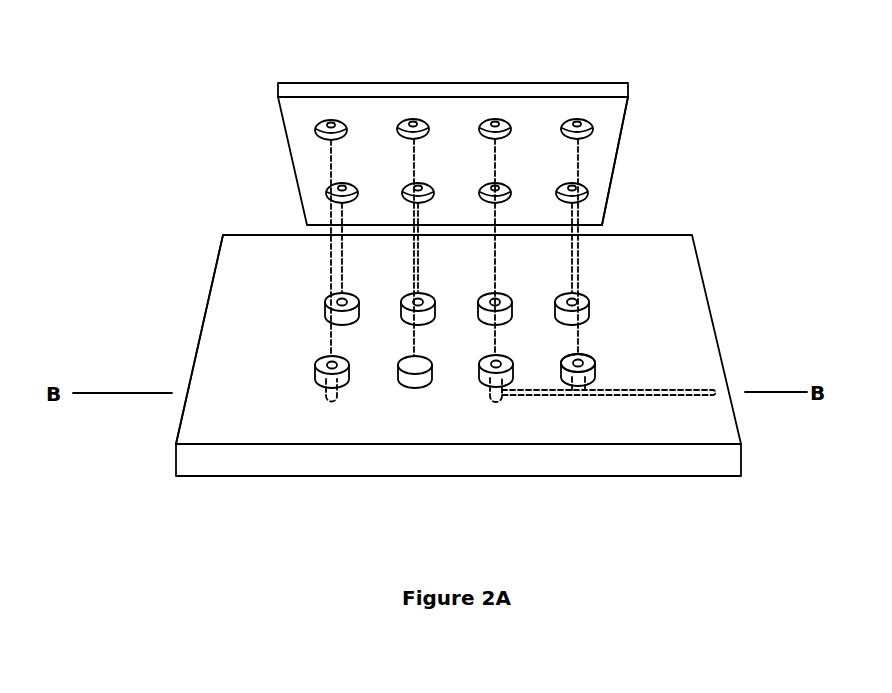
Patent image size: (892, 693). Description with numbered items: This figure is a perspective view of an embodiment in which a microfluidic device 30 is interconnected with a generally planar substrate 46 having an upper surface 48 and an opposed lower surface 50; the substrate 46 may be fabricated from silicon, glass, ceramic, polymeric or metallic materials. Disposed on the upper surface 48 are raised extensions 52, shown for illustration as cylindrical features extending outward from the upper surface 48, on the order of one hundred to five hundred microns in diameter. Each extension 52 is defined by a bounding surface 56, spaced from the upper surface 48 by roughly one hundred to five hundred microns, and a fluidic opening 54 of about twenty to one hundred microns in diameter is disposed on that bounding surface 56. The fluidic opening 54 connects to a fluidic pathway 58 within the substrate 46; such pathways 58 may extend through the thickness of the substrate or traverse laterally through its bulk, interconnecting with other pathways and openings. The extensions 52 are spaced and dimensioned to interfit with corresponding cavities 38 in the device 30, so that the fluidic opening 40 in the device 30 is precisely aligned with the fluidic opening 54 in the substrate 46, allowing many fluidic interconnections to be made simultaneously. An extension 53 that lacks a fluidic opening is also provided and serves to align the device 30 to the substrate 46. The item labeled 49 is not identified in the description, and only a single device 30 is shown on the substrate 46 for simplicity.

The microfluidic device 30 is at (628, 83).
The cavity 38 is at (315, 131).
The fluidic opening 40 is at (330, 122).
The substrate 46 is at (197, 350).
The upper surface 48 is at (213, 292).
The lower surface of upper plate 49 is at (611, 178).
The lower surface 50 is at (215, 486).
The raised extension 52 is at (595, 372).
The extension 53 is at (397, 372).
The fluidic opening 54 is at (583, 357).
The bounding surface 56 is at (593, 363).
The fluidic pathway 58 is at (528, 390).